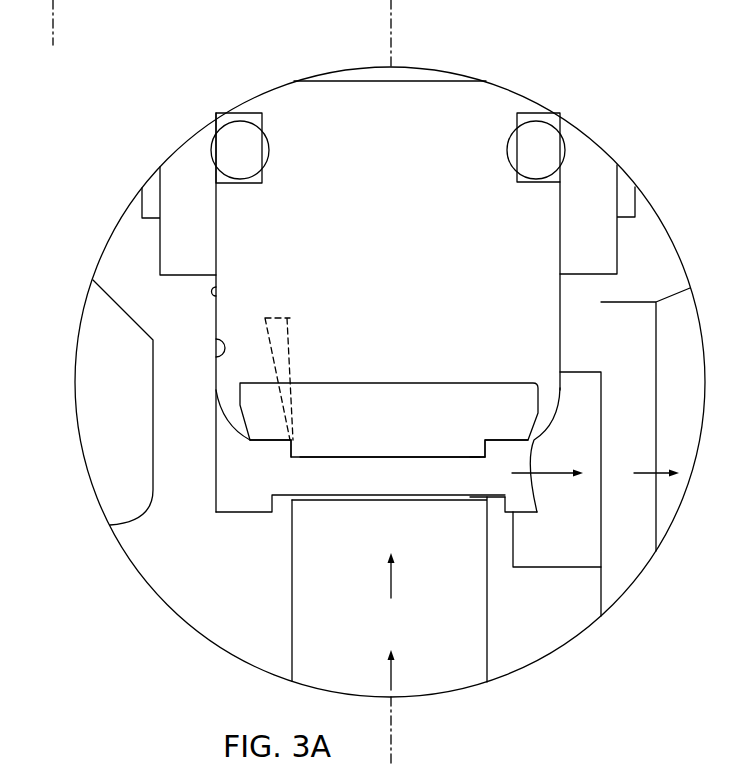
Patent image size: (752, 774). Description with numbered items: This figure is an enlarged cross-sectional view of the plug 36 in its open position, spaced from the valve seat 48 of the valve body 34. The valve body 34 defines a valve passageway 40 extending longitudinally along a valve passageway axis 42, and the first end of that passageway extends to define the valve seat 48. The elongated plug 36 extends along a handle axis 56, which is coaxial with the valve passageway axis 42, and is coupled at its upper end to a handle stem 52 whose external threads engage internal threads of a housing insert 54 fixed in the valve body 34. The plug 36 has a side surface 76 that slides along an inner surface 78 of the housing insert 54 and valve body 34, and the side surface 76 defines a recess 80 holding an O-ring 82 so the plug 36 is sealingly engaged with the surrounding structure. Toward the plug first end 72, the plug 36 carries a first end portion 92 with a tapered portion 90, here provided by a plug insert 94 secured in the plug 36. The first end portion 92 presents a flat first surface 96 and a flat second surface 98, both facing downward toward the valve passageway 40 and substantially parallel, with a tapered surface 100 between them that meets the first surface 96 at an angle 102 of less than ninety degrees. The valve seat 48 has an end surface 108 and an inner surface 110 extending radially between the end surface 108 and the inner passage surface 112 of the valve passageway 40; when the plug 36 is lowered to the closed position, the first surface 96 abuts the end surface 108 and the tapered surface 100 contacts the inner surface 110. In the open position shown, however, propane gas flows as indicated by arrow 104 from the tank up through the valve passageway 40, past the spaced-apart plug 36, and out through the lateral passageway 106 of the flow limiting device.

The valve body 34 is at (160, 322).
The plug 36 is at (572, 232).
The valve passageway 40 is at (488, 623).
The valve passageway axis 42 is at (391, 9).
The valve seat 48 is at (285, 488).
The handle stem 52 is at (416, 78).
The housing insert 54 is at (181, 170).
The handle axis 56 is at (53, 30).
The plug first end 72 is at (483, 450).
The side surface 76 is at (219, 287).
The inner surface 78 is at (216, 357).
The recess 80 is at (530, 178).
The O-ring 82 is at (541, 133).
The tapered portion 90 is at (280, 453).
The first end portion 92 is at (303, 460).
The plug insert 94 is at (459, 397).
The first surface 96 is at (268, 445).
The second surface 98 is at (360, 458).
The tapered surface 100 is at (497, 441).
The angle 102 is at (274, 317).
The arrow 104 is at (541, 477).
The lateral passageway 106 is at (551, 568).
The end surface 108 is at (498, 493).
The inner surface 110 is at (485, 498).
The inner passage surface 112 is at (292, 535).